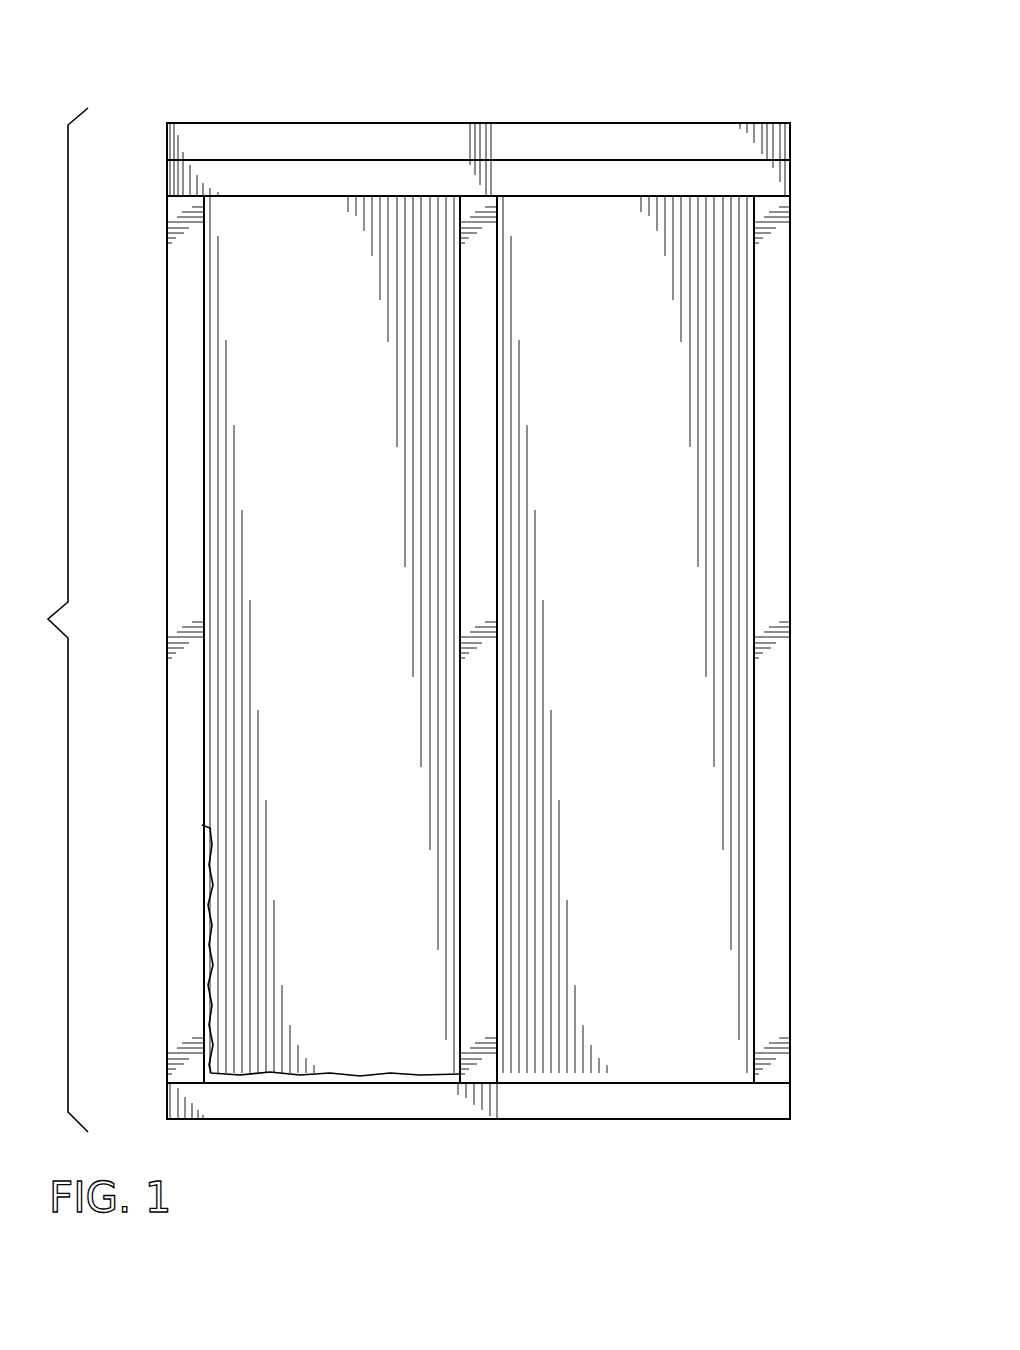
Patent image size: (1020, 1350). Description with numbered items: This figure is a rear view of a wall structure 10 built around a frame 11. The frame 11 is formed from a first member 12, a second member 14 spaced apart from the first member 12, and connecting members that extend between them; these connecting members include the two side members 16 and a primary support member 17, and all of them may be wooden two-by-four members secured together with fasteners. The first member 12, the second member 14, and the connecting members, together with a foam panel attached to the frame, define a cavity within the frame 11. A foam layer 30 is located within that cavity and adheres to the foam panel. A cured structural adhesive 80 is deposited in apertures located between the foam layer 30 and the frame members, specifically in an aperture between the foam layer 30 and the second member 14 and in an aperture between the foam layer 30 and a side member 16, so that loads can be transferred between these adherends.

The wall structure 10 is at (742, 103).
The frame 11 is at (56, 620).
The first member 12 is at (323, 123).
The second member 14 is at (505, 1119).
The side member 16 is at (167, 494).
The primary support member 17 is at (482, 247).
The foam layer 30 is at (243, 314).
The cured structural adhesive 80 is at (207, 963).